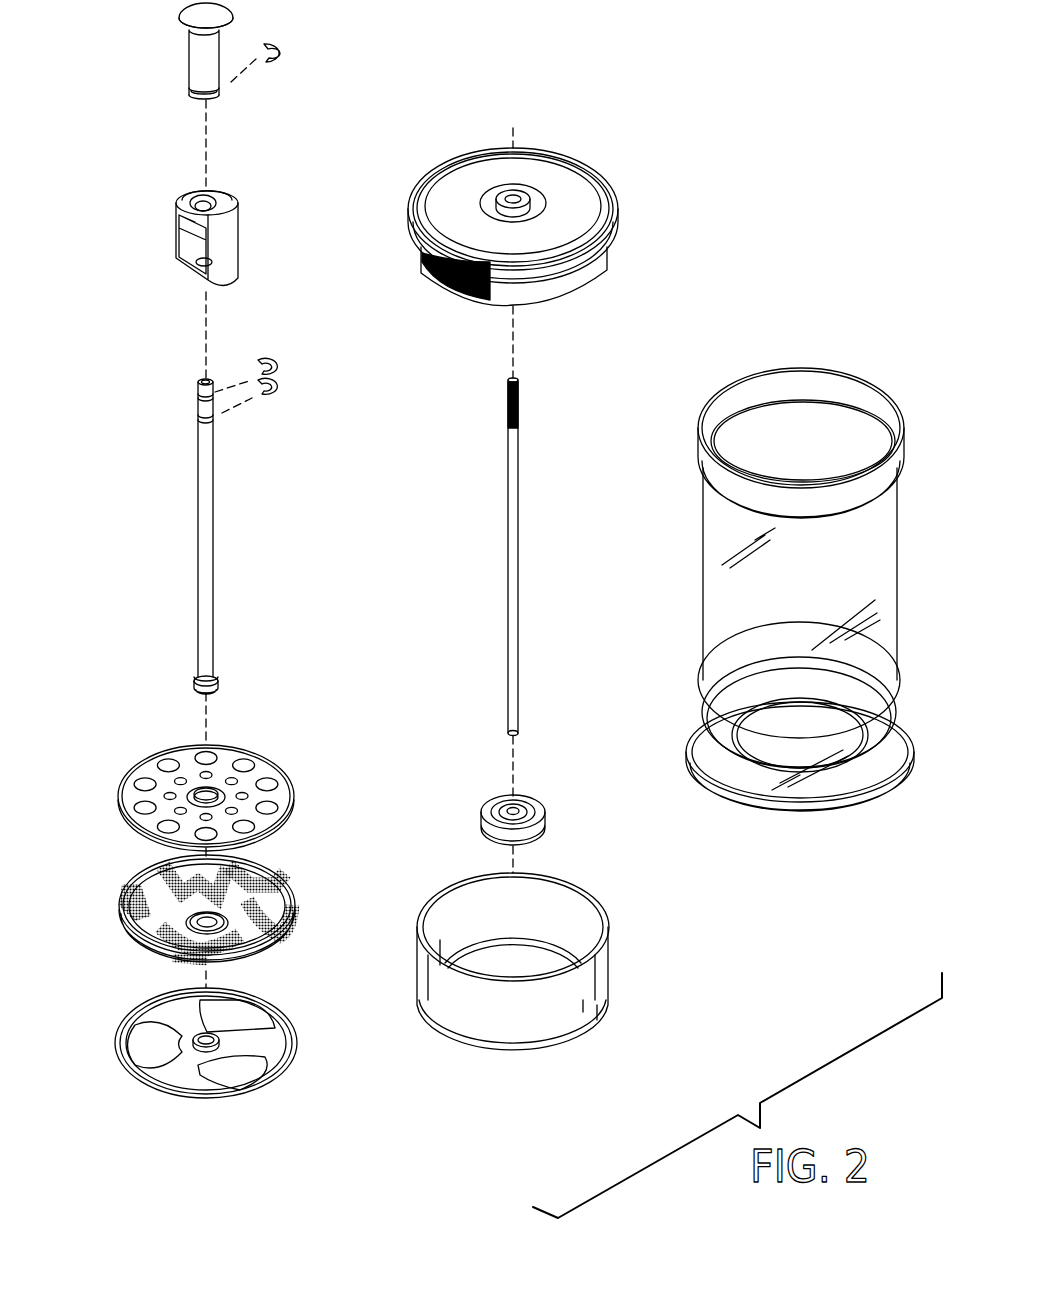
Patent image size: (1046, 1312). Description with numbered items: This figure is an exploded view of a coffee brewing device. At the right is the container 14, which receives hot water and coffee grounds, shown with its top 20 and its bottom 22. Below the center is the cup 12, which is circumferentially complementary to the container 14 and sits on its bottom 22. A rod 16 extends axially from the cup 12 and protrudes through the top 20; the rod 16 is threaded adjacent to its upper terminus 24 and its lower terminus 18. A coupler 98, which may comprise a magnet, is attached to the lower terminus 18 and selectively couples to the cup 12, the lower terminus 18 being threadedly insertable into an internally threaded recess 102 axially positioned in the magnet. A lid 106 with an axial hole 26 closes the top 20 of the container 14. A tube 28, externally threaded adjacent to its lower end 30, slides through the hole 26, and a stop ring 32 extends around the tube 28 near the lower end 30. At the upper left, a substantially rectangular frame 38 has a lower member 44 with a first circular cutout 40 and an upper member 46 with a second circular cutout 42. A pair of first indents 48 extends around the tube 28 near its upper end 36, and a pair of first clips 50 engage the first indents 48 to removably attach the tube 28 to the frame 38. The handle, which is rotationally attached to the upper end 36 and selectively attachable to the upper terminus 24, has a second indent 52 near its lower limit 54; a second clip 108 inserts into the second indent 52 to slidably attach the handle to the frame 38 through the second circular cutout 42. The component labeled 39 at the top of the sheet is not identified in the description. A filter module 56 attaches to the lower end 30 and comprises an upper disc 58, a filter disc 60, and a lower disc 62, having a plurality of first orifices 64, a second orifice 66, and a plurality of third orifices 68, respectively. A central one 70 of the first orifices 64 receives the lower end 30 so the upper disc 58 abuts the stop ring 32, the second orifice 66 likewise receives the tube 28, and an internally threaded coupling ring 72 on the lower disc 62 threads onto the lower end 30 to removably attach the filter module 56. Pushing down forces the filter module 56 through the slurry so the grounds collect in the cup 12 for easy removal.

The cup 12 is at (612, 973).
The container 14 is at (823, 558).
The rod 16 is at (570, 559).
The lower terminus 18 is at (520, 735).
The top 20 is at (852, 374).
The bottom 22 is at (808, 727).
The upper terminus 24 is at (520, 385).
The hole 26 is at (520, 196).
The tube 28 is at (139, 546).
The lower end 30 is at (197, 693).
The stop ring 32 is at (197, 672).
The upper end 36 is at (197, 382).
The frame 38 is at (202, 215).
The pin 39 is at (145, 67).
The first circular cutout 40 is at (203, 263).
The second circular cutout 42 is at (217, 200).
The lower member 44 is at (177, 263).
The upper member 46 is at (240, 195).
The first indents 48 is at (195, 398).
The first clips 50 is at (288, 357).
The second indent 52 is at (187, 88).
The lower limit 54 is at (197, 100).
The filter module 56 is at (218, 917).
The upper disc 58 is at (173, 766).
The filter disc 60 is at (169, 921).
The lower disc 62 is at (208, 1076).
The first orifices 64 is at (263, 803).
The second orifice 66 is at (197, 925).
The third orifices 68 is at (230, 1077).
The central one of the first orifices 70 is at (187, 787).
The coupling ring 72 is at (227, 1040).
The coupler 98 is at (534, 789).
The recess 102 is at (512, 808).
The lid 106 is at (610, 183).
The second clip 108 is at (293, 58).